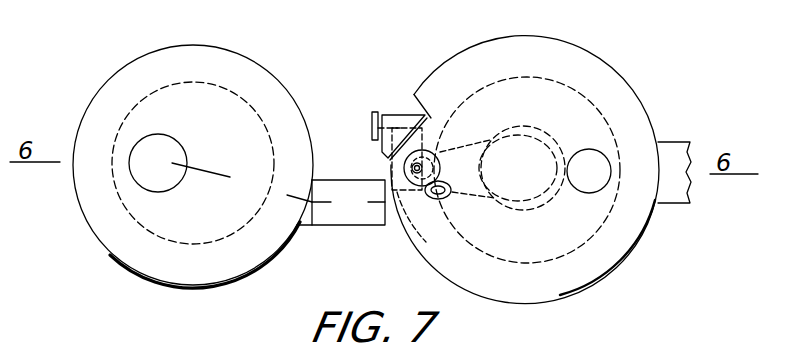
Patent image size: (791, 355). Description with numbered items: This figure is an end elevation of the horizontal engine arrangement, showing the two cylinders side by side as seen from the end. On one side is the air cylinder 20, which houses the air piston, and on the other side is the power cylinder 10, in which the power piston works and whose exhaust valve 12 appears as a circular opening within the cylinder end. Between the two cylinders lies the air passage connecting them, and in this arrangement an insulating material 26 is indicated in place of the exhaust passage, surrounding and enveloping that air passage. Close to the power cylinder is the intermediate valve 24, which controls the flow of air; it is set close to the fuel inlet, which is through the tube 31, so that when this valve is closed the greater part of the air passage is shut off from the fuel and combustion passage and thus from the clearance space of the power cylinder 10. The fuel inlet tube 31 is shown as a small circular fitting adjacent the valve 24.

The air cylinder 20 is at (245, 33).
The insulating material 26 is at (335, 183).
The intermediate valve 24 is at (403, 229).
The power cylinder 10 is at (635, 58).
The fuel inlet nozzle 31 is at (428, 151).
The exhaust valve 12 is at (589, 182).